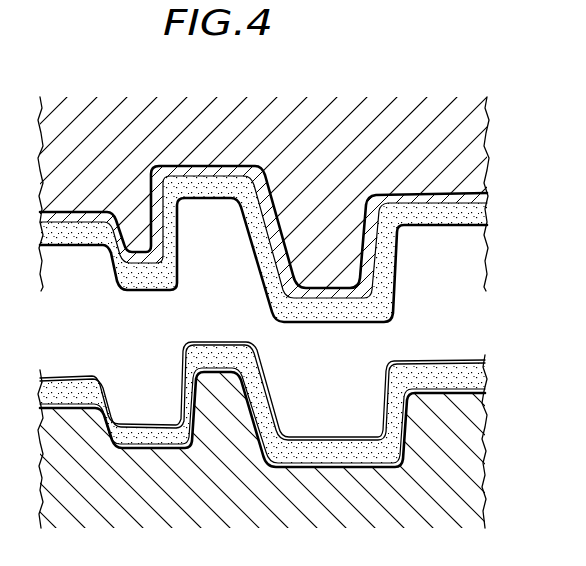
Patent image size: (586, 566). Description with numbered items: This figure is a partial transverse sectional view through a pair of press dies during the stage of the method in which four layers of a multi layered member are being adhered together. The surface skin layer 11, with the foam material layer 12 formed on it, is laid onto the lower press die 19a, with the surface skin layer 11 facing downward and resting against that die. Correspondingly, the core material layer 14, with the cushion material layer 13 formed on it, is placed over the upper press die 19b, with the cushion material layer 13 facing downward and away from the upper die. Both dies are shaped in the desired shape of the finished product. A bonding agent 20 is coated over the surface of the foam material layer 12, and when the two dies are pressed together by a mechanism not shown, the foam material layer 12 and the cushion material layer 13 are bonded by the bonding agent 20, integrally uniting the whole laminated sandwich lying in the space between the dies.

The upper press die 19b is at (450, 135).
The core material layer 14 is at (470, 196).
The cushion material layer 13 is at (452, 216).
The lower press die 19a is at (453, 491).
The surface skin layer 11 is at (445, 406).
The foam material layer 12 is at (463, 378).
The bonding agent 20 is at (437, 362).